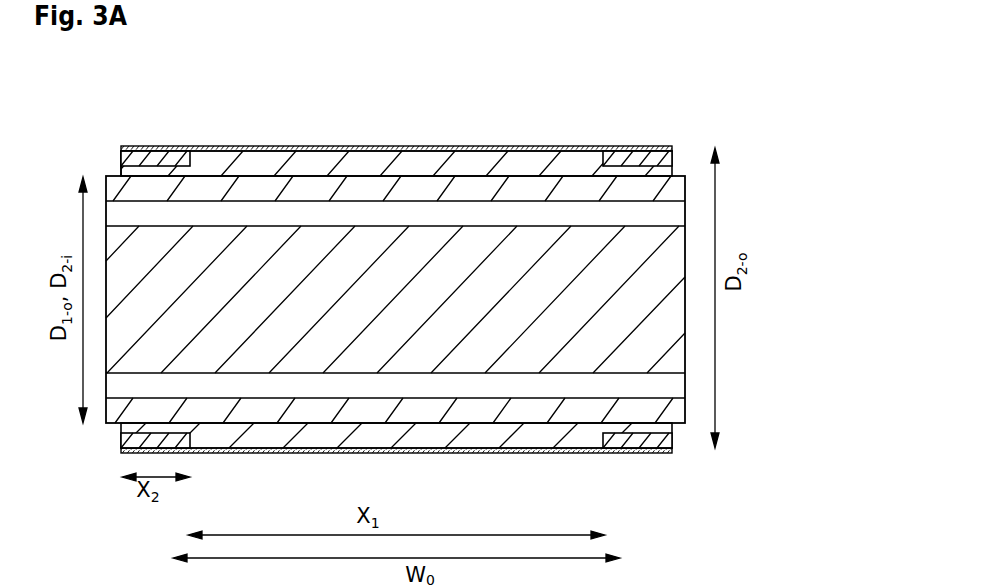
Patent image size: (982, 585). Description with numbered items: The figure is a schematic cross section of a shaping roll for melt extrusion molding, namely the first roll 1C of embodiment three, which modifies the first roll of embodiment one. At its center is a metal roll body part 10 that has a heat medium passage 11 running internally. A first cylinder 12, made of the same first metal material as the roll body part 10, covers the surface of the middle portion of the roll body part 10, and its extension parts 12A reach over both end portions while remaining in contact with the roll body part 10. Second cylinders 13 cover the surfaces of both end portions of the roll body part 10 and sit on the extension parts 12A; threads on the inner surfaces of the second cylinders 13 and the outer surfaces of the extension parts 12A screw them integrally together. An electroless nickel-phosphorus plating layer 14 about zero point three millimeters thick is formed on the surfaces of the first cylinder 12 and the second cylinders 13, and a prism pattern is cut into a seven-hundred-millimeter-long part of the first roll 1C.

The first roll 1C is at (493, 110).
The roll body part 10 is at (542, 248).
The heat medium passage 11 is at (336, 212).
The first cylinder 12 is at (349, 162).
The extension parts of the first cylinder 12A is at (121, 175).
The second cylinders 13 is at (157, 150).
The electroless nickel-phosphorus plating layer 14 is at (222, 147).